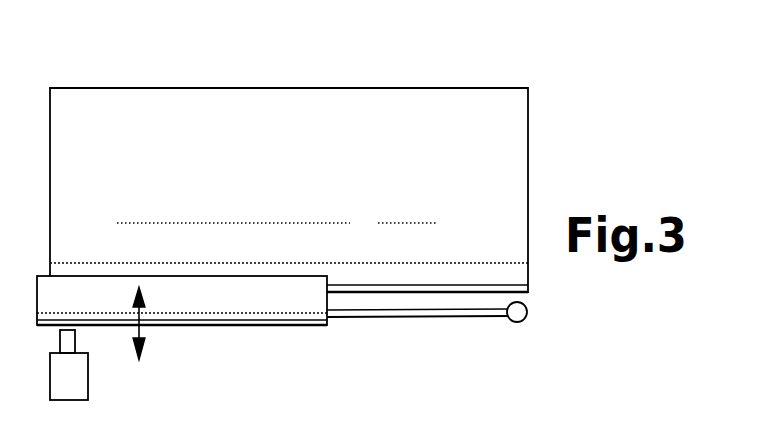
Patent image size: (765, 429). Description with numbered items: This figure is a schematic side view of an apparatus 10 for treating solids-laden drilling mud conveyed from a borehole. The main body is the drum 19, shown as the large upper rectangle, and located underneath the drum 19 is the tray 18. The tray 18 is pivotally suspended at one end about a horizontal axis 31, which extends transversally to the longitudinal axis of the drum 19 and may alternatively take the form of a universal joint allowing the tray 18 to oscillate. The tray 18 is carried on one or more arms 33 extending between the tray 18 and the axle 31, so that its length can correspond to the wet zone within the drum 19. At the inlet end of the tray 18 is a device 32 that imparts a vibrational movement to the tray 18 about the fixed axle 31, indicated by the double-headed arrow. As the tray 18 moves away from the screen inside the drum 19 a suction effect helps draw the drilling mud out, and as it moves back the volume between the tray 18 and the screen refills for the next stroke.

The apparatus 10 is at (205, 78).
The drum 19 is at (405, 141).
The tray 18 is at (224, 306).
The device for imparting vibrational movement 32 is at (70, 380).
The arms 33 is at (423, 318).
The horizontal axis (fixed axle) 31 is at (515, 322).